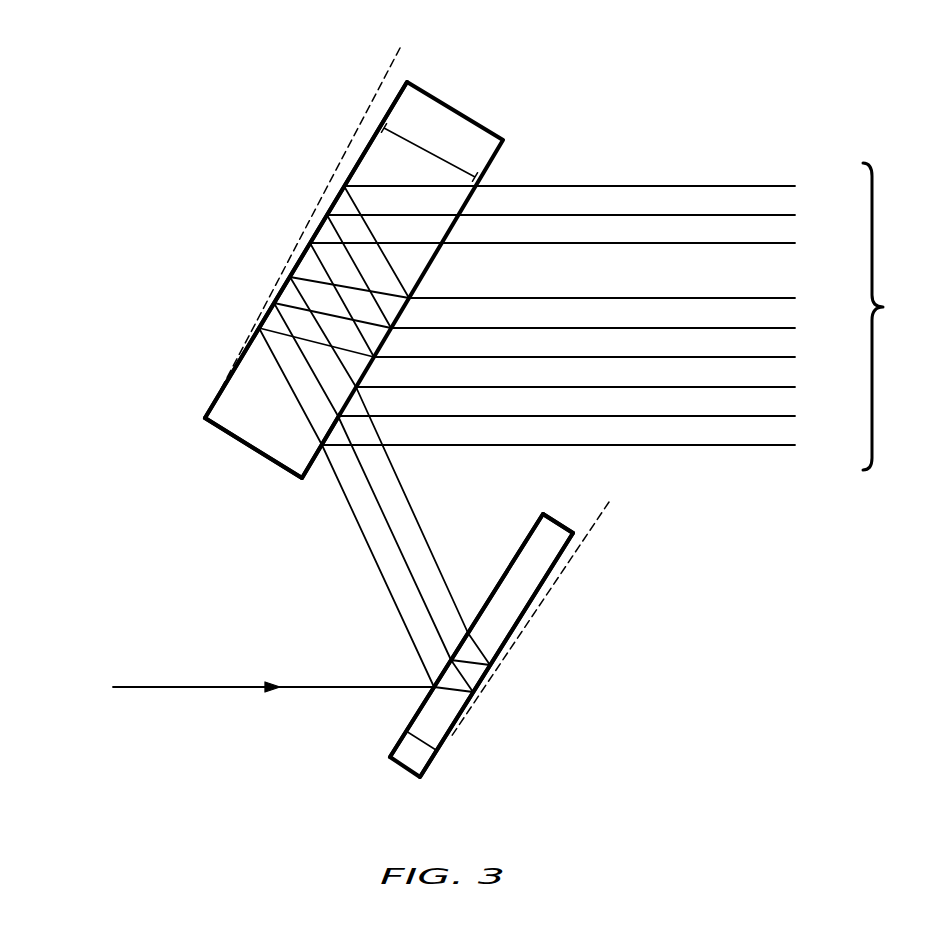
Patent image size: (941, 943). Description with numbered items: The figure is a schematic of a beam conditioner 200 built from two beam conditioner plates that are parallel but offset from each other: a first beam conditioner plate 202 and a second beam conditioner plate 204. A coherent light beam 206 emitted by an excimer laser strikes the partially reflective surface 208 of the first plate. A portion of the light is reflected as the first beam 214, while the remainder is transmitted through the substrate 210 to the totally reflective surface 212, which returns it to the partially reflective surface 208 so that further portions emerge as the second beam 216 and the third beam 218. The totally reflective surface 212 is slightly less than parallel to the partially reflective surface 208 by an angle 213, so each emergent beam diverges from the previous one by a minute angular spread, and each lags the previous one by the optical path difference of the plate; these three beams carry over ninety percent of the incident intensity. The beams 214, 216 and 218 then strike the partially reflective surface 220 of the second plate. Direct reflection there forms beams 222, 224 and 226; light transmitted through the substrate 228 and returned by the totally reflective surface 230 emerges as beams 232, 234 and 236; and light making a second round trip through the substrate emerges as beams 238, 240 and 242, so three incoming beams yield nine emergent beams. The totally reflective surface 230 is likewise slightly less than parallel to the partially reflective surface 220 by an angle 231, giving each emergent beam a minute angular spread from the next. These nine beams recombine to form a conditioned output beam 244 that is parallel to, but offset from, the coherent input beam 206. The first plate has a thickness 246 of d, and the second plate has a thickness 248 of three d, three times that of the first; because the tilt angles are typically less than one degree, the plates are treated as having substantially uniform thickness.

The beam conditioner 200 is at (226, 173).
The first beam conditioner plate 202 is at (418, 775).
The second beam conditioner plate 204 is at (447, 100).
The coherent light beam 206 is at (179, 685).
The partially reflective surface 208 is at (523, 540).
The substrate 210 is at (553, 530).
The totally reflective surface 212 is at (560, 558).
The angle 213 is at (581, 530).
The first beam 214 is at (403, 623).
The second beam 216 is at (408, 567).
The third beam 218 is at (425, 535).
The partially reflective surface 220 is at (312, 470).
The emergent reflected beam 222 is at (577, 445).
The emergent reflected beam 224 is at (585, 416).
The emergent reflected beam 226 is at (594, 387).
The substrate 228 is at (247, 450).
The totally reflective surface 230 is at (210, 410).
The angle 231 is at (400, 78).
The emergent reflected beam 232 is at (603, 357).
The emergent reflected beam 234 is at (612, 328).
The emergent reflected beam 236 is at (621, 298).
The emergent reflected beam 238 is at (571, 243).
The emergent reflected beam 240 is at (580, 215).
The emergent reflected beam 242 is at (588, 186).
The conditioned output beam 244 is at (891, 316).
The thickness 246 is at (425, 737).
The thickness 248 is at (429, 155).